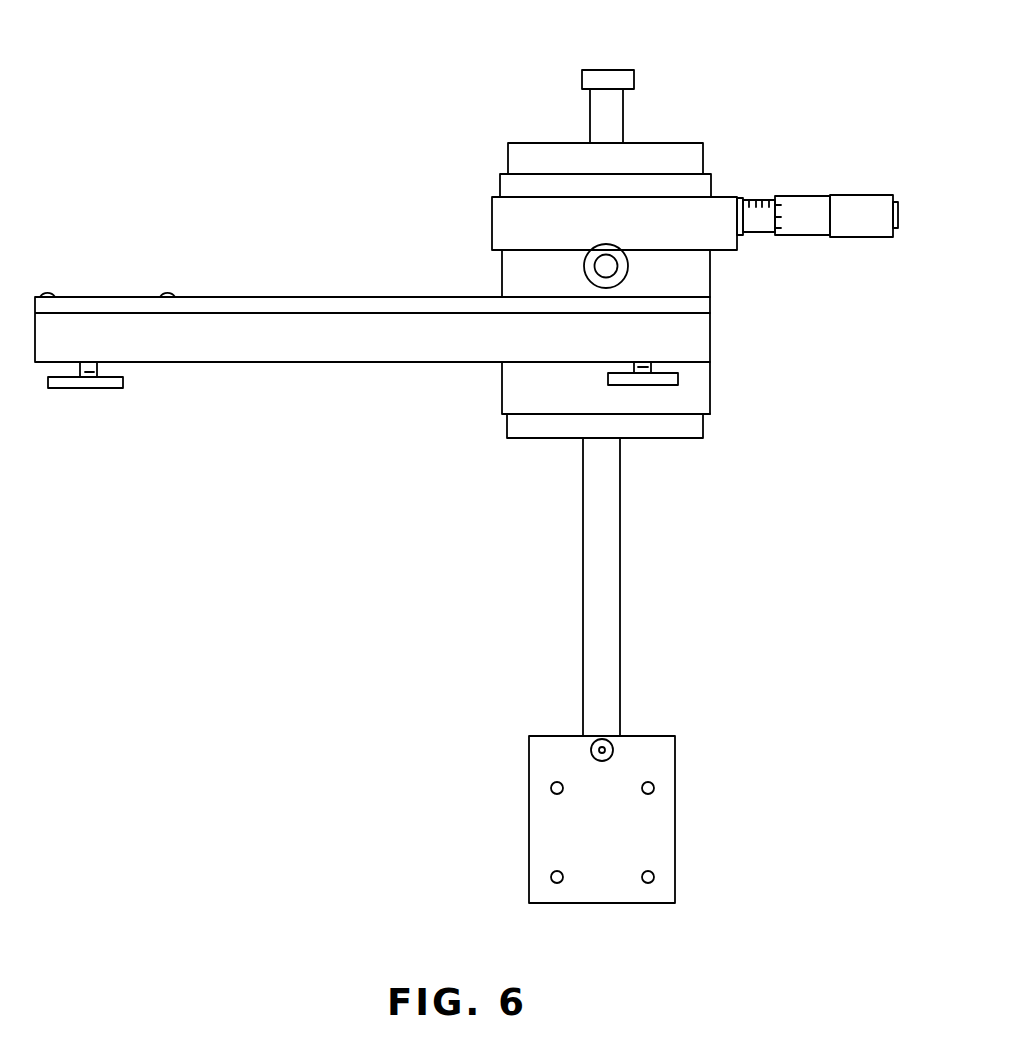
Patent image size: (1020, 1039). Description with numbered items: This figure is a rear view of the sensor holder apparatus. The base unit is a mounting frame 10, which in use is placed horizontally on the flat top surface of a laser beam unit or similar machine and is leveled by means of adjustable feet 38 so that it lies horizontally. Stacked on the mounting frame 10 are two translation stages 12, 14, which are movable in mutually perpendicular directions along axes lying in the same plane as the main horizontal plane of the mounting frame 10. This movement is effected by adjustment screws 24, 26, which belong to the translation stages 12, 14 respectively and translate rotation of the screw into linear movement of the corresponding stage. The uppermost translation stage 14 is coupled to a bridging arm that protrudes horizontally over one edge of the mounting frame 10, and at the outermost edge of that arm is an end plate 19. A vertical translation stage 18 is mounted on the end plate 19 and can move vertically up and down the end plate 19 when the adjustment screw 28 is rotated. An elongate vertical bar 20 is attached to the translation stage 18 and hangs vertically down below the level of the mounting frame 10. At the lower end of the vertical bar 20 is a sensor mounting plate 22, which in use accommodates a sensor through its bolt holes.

The mounting frame 10 is at (223, 355).
The translation stage 12 is at (698, 273).
The translation stage 14 is at (505, 220).
The vertical translation stage 18 is at (689, 426).
The end plate 19 is at (512, 388).
The elongate vertical bar 20 is at (610, 580).
The sensor mounting plate 22 is at (655, 820).
The adjustment screw 24 is at (583, 266).
The adjustment screw 26 is at (852, 195).
The adjustment screw 28 is at (613, 77).
The adjustable feet 38 is at (85, 390).